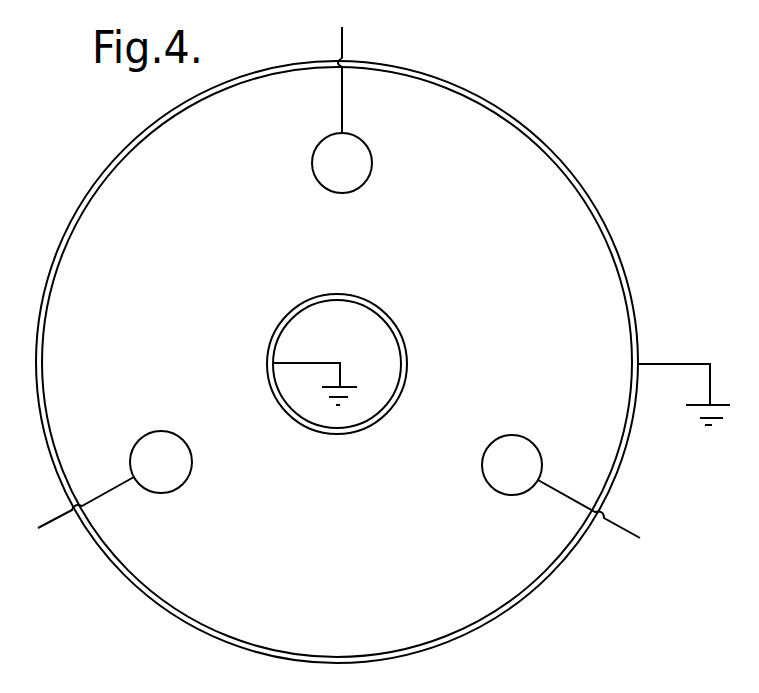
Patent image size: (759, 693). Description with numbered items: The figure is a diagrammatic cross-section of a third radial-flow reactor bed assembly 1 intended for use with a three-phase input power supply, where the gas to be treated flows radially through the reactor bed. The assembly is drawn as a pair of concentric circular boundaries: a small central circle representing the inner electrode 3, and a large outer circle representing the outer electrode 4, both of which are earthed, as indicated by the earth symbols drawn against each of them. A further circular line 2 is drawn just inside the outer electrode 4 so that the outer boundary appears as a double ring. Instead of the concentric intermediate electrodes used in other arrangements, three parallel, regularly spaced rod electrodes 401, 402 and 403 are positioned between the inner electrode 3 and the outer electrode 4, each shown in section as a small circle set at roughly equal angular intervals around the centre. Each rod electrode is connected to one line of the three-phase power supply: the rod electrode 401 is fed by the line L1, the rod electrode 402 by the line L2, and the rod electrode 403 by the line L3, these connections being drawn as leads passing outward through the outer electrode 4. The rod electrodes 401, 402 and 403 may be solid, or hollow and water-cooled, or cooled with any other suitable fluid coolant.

The radial-flow reactor bed assembly 1 is at (592, 181).
The outer conductor ring 2 is at (587, 254).
The inner electrode 3 is at (365, 310).
The outer electrode 4 is at (634, 321).
The rod electrode 401 is at (368, 158).
The rod electrode 402 is at (173, 470).
The rod electrode 403 is at (490, 472).
The first phase line L1 is at (355, 79).
The second phase line L2 is at (77, 525).
The third phase line L3 is at (603, 512).